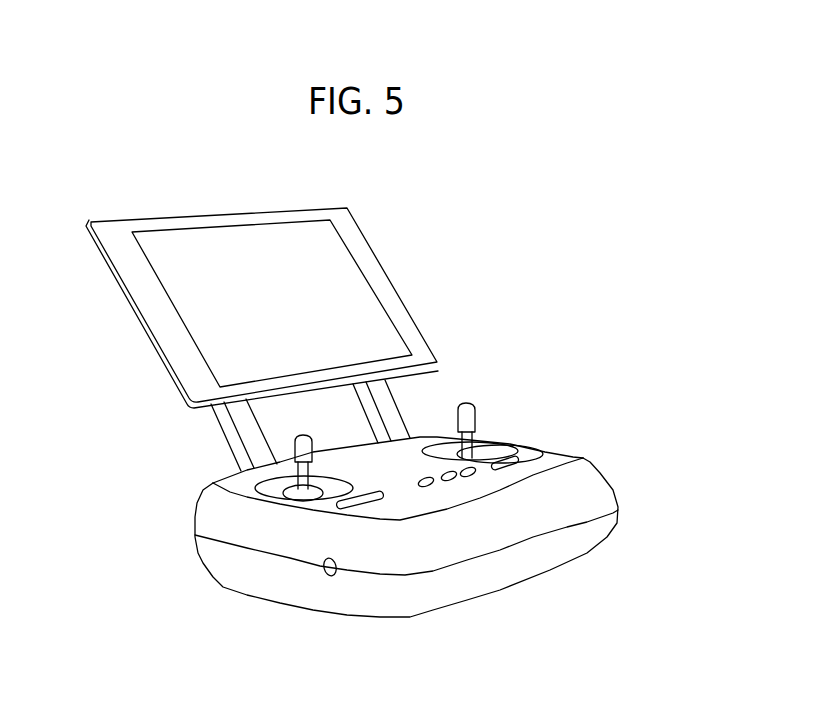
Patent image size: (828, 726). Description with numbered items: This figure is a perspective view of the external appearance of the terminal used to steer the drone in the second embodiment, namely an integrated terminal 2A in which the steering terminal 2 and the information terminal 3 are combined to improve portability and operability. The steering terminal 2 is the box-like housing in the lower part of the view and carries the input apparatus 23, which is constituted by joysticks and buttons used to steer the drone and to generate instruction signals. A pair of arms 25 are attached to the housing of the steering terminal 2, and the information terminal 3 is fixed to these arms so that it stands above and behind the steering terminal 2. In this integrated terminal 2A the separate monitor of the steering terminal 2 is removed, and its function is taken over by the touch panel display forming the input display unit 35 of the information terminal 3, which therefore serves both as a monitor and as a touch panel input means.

The steering terminal 2 is at (567, 453).
The integrated terminal 2A is at (543, 290).
The information terminal 3 is at (370, 243).
The input apparatus 23 is at (297, 450).
The arms 25 is at (222, 434).
The input display unit 35 is at (377, 332).